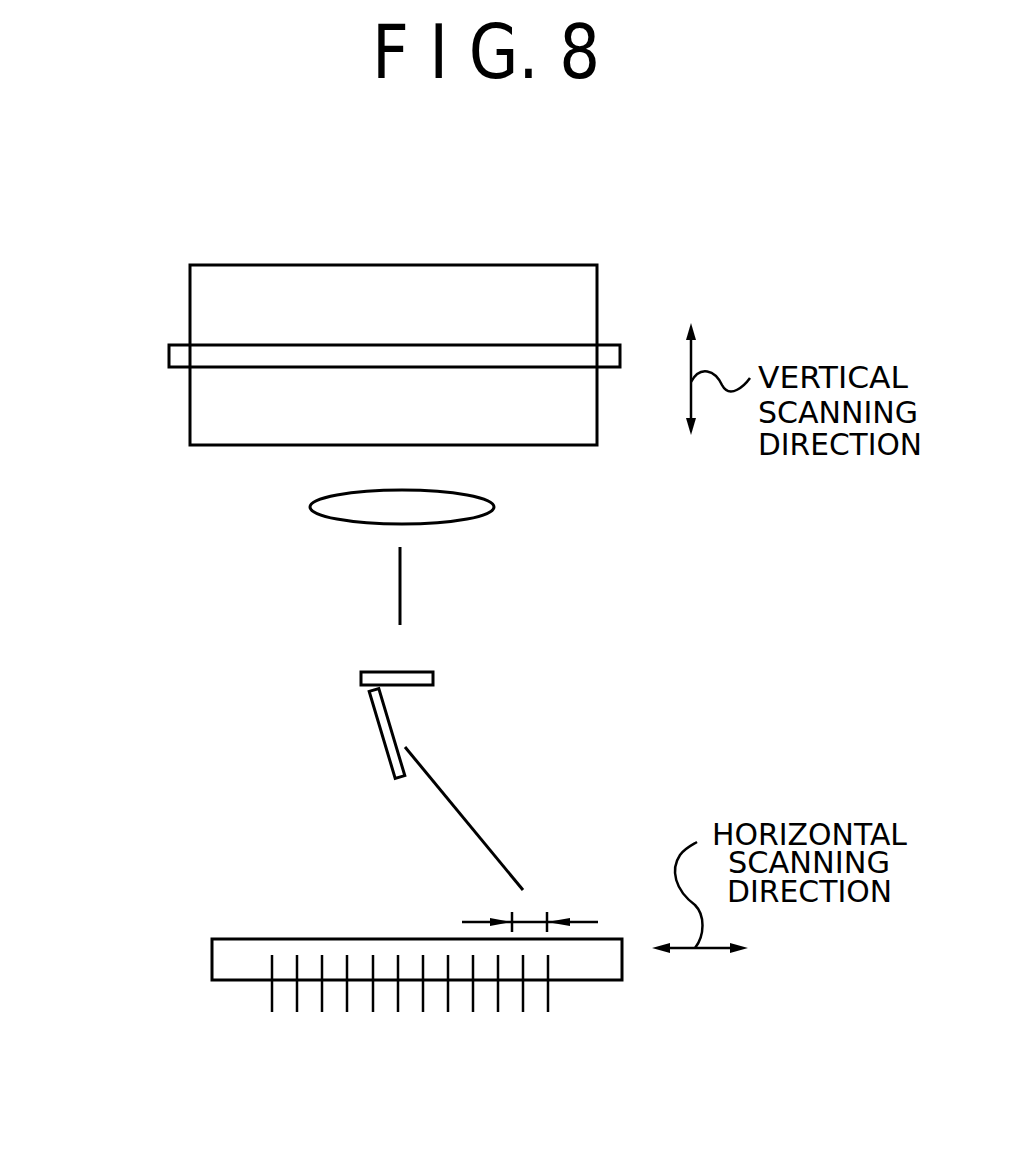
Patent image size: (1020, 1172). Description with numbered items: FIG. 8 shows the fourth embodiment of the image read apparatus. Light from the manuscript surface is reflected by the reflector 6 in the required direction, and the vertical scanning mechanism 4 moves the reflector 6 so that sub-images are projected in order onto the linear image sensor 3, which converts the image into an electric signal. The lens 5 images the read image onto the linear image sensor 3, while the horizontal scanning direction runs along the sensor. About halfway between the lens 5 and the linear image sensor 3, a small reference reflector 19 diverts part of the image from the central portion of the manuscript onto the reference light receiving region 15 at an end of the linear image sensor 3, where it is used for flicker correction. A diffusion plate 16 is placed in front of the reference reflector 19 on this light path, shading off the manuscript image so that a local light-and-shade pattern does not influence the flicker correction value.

The linear image sensor 3 is at (585, 980).
The vertical scanning mechanism 4 is at (190, 436).
The lens 5 is at (490, 515).
The reflector 6 is at (597, 432).
The reference light receiving region 15 is at (533, 920).
The diffusion plate 16 is at (373, 670).
The reference reflector 19 is at (390, 752).